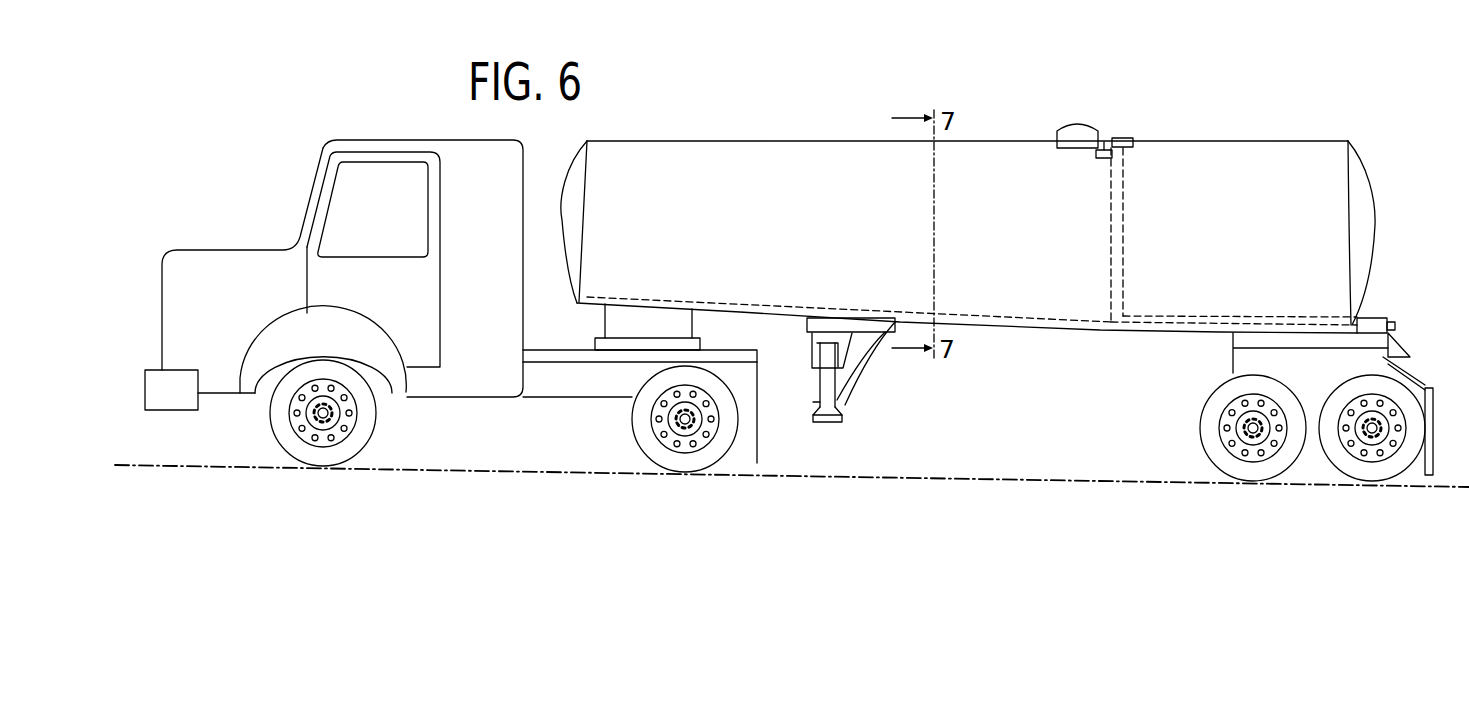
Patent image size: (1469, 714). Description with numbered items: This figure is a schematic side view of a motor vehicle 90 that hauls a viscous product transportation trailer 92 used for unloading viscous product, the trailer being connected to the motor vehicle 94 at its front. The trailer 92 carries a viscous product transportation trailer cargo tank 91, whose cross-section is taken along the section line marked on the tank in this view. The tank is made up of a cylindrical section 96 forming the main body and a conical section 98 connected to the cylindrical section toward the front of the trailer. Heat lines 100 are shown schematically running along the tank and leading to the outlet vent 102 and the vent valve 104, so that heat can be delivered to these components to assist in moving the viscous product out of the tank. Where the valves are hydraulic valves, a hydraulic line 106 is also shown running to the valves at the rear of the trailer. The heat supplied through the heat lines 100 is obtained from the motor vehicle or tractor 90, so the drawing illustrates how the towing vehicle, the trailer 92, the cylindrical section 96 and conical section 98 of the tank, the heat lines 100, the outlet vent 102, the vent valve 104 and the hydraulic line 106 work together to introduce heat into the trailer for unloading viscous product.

The motor vehicle 90 is at (988, 88).
The viscous product transportation trailer cargo tank 91 is at (855, 140).
The viscous product transportation trailer 92 is at (1095, 330).
The motor vehicle 94 is at (473, 150).
The cylindrical section 96 is at (1257, 155).
The conical section 98 is at (777, 157).
The heat lines 100 is at (1188, 336).
The outlet vent 102 is at (1105, 148).
The vent valve 104 is at (1125, 137).
The hydraulic line 106 is at (1306, 320).